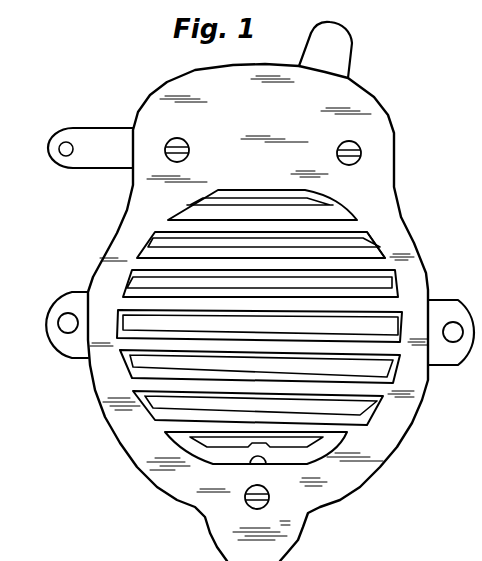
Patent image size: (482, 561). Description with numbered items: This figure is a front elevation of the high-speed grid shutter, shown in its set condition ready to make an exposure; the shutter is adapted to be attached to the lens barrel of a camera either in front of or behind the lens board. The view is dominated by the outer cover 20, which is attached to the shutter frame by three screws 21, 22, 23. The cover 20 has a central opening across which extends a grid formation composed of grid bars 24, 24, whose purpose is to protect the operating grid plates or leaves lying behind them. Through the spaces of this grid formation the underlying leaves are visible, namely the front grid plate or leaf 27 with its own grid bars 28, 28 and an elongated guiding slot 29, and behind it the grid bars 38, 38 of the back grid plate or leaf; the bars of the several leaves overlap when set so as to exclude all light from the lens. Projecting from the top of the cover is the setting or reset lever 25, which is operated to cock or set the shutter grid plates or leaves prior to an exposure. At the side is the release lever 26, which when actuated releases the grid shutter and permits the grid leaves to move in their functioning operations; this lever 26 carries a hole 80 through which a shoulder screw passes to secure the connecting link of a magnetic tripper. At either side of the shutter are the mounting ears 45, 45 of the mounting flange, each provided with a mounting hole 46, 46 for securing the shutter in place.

The outer cover 20 is at (379, 108).
The screw 21 is at (265, 488).
The screw 22 is at (173, 143).
The screw 23 is at (353, 148).
The grid bar 24 is at (354, 230).
The setting or reset lever 25 is at (343, 52).
The release lever 26 is at (103, 137).
The front grid plate or leaf 27 is at (309, 452).
The grid bar 28 is at (377, 255).
The elongated slot 29 is at (257, 463).
The grid bar 38 is at (309, 205).
The mounting ear 45 is at (71, 348).
The mounting hole 46 is at (65, 313).
The hole 80 is at (67, 156).